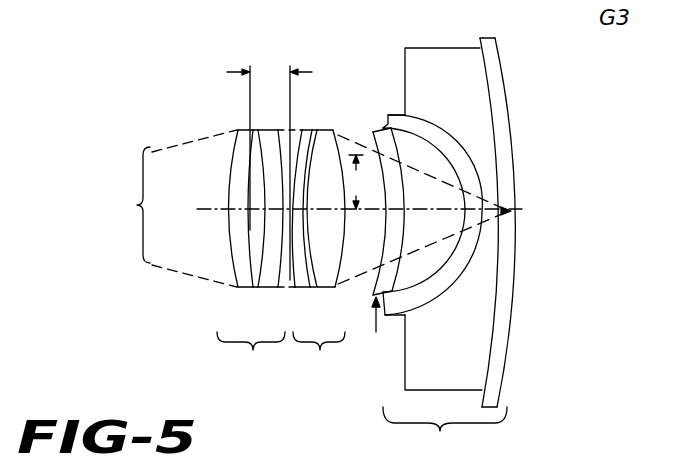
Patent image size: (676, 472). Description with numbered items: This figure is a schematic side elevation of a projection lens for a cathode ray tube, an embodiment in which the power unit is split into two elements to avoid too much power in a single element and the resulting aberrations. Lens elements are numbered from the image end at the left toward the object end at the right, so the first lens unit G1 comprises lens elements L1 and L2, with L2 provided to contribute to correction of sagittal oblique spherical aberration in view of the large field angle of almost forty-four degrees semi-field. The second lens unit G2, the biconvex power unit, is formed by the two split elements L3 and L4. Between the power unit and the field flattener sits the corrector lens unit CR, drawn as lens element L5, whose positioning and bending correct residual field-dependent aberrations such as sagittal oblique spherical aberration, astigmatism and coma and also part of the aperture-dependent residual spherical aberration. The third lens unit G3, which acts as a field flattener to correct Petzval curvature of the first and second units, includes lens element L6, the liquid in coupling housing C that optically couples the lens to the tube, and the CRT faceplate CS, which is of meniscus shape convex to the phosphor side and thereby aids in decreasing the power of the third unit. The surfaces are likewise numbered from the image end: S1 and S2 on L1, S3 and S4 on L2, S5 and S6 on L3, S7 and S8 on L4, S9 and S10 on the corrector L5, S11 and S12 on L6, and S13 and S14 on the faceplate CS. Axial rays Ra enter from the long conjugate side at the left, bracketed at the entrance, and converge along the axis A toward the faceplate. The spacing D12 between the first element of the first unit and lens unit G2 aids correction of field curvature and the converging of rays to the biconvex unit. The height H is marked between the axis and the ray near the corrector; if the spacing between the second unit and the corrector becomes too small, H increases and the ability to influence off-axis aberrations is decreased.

The lens element L1 is at (221, 195).
The lens element L2 is at (239, 210).
The lens element L3 is at (329, 188).
The lens element L4 is at (346, 185).
The lens element L5 is at (417, 181).
The lens element L6 is at (477, 209).
The lens surface S1 is at (236, 274).
The lens surface S2 is at (249, 243).
The lens surface S3 is at (259, 228).
The lens surface S4 is at (282, 278).
The lens surface S5 is at (298, 289).
The lens surface S6 is at (309, 282).
The lens surface S7 is at (313, 256).
The lens surface S8 is at (345, 231).
The lens surface S9 is at (386, 264).
The lens surface S10 is at (405, 222).
The lens surface S11 is at (420, 279).
The lens surface S12 is at (462, 280).
The lens surface S13 is at (500, 278).
The lens surface S14 is at (518, 233).
The liquid optical coupler C is at (432, 48).
The CRT faceplate CS is at (534, 207).
The first lens unit G1 is at (239, 238).
The second lens unit G2 is at (338, 215).
The third lens unit G3 is at (469, 237).
The axial rays Ra is at (171, 208).
The optical axis A is at (359, 197).
The height H is at (357, 182).
The spacing D12 is at (269, 172).
The corrector lens unit CR is at (364, 327).